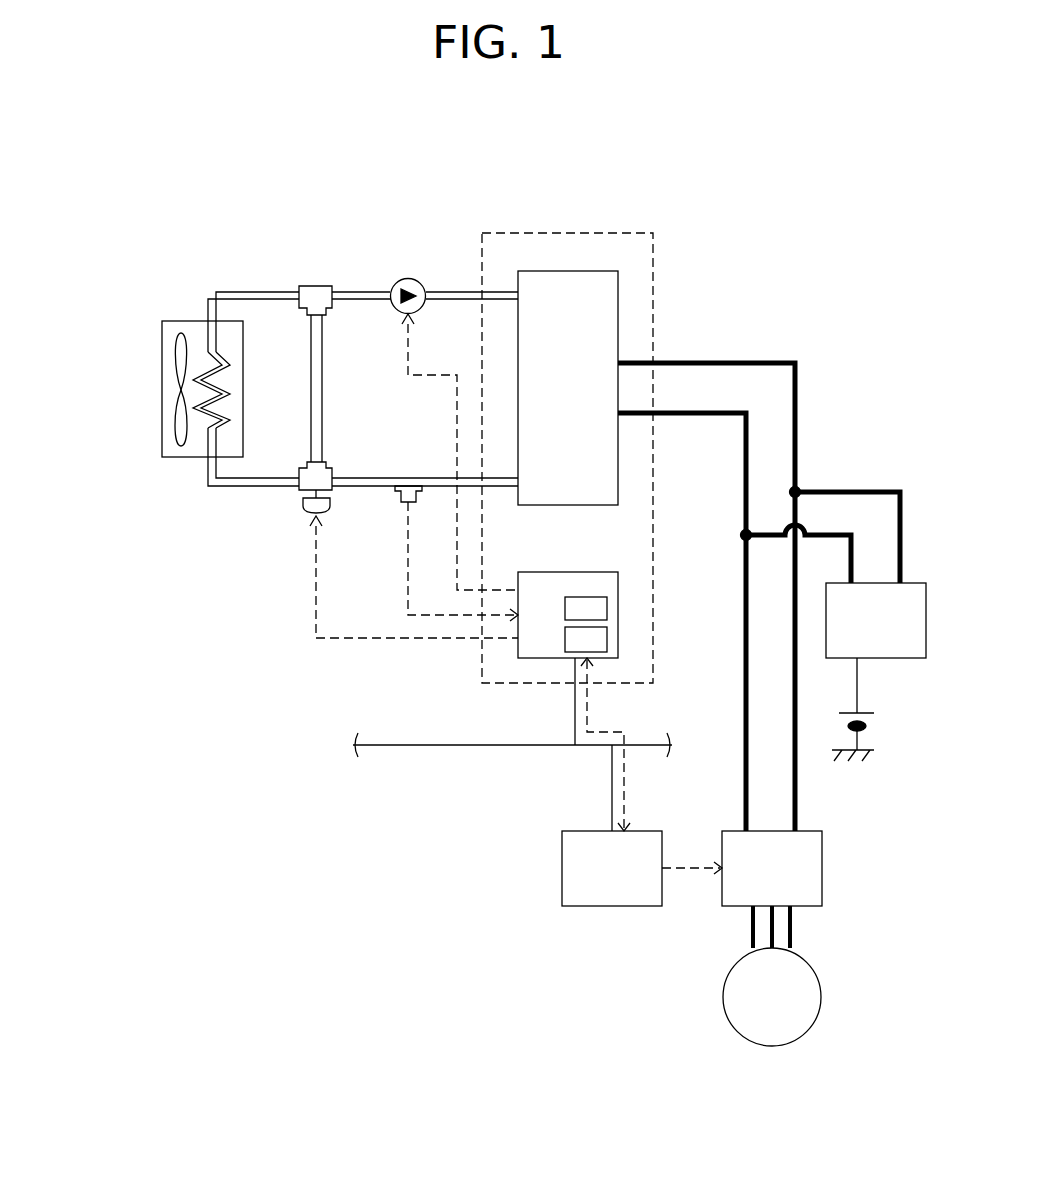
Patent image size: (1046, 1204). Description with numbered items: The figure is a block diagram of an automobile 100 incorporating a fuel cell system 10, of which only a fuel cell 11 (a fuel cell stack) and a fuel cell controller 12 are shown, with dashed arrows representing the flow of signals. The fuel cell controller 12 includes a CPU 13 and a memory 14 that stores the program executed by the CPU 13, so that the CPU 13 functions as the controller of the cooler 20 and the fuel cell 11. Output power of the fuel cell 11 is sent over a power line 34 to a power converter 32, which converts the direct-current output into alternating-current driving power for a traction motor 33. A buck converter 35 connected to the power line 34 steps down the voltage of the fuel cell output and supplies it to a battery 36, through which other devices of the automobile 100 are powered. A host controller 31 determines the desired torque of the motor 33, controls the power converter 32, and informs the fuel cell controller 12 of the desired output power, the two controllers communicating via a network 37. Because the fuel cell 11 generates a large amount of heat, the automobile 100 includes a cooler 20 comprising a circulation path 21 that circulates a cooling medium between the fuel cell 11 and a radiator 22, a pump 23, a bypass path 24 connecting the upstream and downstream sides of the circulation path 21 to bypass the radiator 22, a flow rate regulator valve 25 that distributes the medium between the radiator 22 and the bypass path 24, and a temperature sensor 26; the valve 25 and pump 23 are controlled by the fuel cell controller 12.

The automobile 100 is at (124, 190).
The fuel cell system 10 is at (630, 233).
The fuel cell 11 is at (618, 293).
The fuel cell controller 12 is at (618, 576).
The CPU 13 is at (607, 608).
The memory 14 is at (607, 640).
The cooler 20 is at (378, 370).
The circulation path 21 is at (249, 292).
The radiator 22 is at (187, 321).
The pump 23 is at (406, 279).
The bypass path 24 is at (322, 452).
The flow rate regulator valve 25 is at (302, 490).
The temperature sensor 26 is at (401, 504).
The host controller 31 is at (562, 851).
The power converter 32 is at (822, 853).
The motor 33 is at (816, 972).
The power line 34 is at (704, 422).
The buck converter 35 is at (925, 583).
The battery 36 is at (872, 713).
The network 37 is at (397, 745).